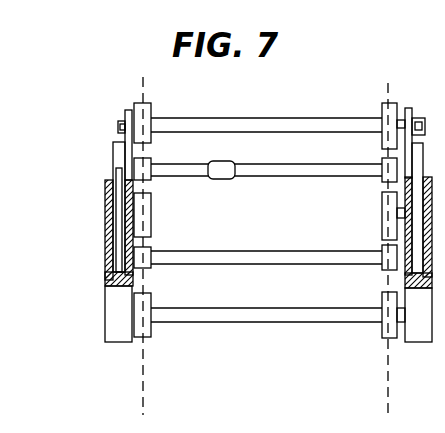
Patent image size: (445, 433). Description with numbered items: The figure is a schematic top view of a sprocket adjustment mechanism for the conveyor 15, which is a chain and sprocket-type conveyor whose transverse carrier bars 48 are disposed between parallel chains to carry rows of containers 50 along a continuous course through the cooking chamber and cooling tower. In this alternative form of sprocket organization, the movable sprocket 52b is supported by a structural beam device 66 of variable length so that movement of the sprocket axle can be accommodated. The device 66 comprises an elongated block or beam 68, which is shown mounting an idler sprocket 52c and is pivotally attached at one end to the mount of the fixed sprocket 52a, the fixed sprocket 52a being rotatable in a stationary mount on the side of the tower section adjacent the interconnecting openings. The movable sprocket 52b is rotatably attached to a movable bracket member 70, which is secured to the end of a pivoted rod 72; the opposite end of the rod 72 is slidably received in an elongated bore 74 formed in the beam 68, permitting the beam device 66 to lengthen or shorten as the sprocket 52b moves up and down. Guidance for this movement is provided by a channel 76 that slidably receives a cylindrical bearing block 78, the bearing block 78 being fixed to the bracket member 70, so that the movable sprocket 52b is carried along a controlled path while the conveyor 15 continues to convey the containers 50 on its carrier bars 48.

The conveyor 15 is at (391, 366).
The transverse carrier bars 48 is at (291, 177).
The containers 50 is at (220, 147).
The fixed sprocket 52a is at (150, 336).
The movable sprocket 52b is at (151, 103).
The idler sprocket 52c is at (151, 214).
The structural beam devices 66 is at (104, 254).
The beam 68 is at (113, 325).
The bracket member 70 is at (134, 104).
The pivoted rod 72 is at (114, 162).
The elongated bore 74 is at (116, 214).
The channel 76 is at (119, 124).
The cylindrical bearing block 78 is at (117, 129).